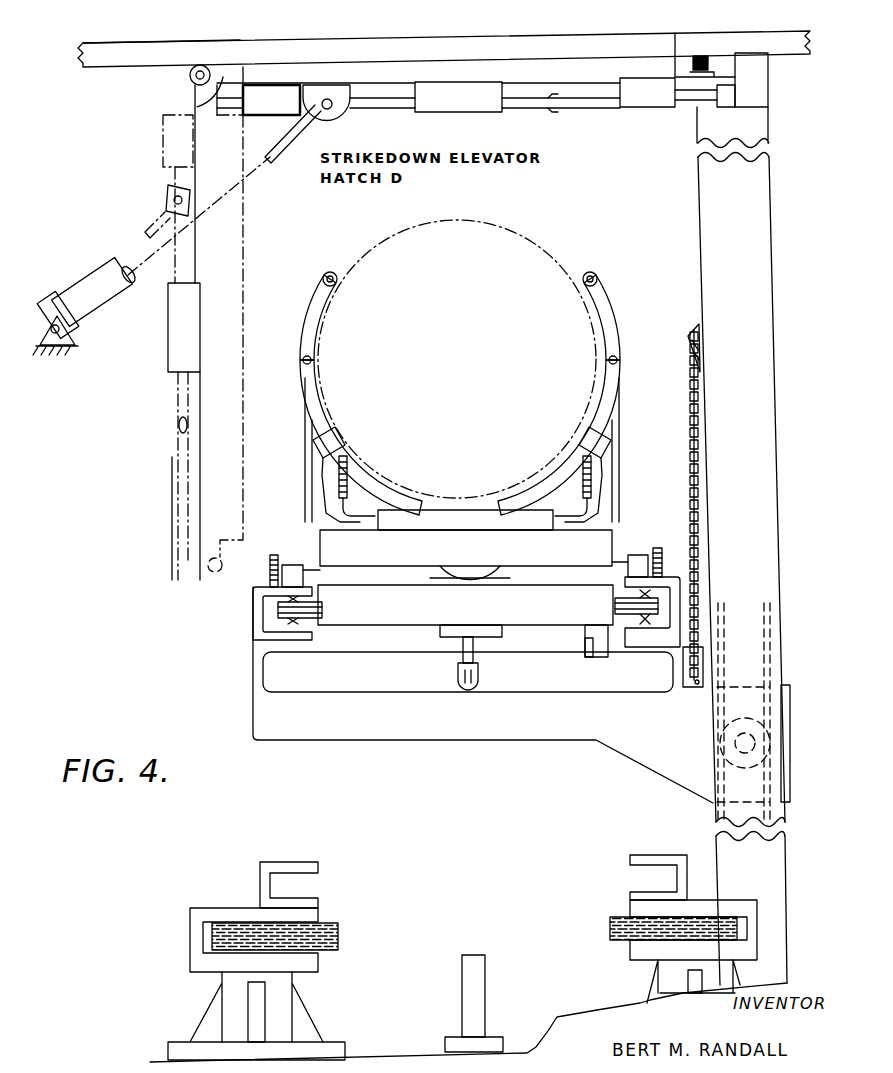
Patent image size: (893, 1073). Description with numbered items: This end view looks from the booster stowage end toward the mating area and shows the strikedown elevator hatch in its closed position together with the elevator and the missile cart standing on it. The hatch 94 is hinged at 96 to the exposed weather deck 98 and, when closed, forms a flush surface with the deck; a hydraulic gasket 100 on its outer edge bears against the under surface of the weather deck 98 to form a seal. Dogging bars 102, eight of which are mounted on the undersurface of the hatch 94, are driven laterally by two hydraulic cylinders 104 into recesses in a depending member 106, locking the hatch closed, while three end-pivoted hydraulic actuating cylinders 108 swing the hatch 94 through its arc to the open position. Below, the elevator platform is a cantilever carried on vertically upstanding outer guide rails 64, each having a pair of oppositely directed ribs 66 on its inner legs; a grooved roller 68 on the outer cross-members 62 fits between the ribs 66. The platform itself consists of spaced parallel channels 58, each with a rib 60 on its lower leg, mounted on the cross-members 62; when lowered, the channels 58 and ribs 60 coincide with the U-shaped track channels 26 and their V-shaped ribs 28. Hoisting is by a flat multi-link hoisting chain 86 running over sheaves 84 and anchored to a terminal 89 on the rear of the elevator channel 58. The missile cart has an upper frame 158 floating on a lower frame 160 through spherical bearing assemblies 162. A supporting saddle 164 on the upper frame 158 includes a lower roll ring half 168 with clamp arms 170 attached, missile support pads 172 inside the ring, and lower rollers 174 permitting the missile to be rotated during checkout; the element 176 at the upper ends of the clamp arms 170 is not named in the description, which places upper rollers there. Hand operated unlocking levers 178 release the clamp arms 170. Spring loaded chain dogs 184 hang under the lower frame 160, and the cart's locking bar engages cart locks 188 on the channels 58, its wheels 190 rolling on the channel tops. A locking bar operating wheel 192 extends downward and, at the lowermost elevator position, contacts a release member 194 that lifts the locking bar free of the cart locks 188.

The hatch 94 is at (420, 43).
The weather deck 98 is at (170, 44).
The hinge 96 is at (205, 103).
The hydraulic gasket 100 is at (705, 53).
The dogging bars 102 is at (591, 104).
The hydraulic cylinders 104 is at (461, 104).
The depending member 106 is at (762, 94).
The hydraulic actuating cylinders 108 is at (97, 280).
The outer guide rails 64 is at (699, 250).
The ribs 66 is at (714, 708).
The grooved roller 68 is at (720, 745).
The sheaves 84 is at (702, 353).
The hoisting chain 86 is at (690, 400).
The clamp arms 170 is at (316, 316).
The pivot pin 176 is at (330, 272).
The lower roll ring half 168 is at (305, 402).
The front supporting saddle 164 is at (372, 482).
The lower rollers 174 is at (348, 438).
The missile support pads 172 is at (552, 466).
The unlocking levers 178 is at (339, 478).
The upper frame 158 is at (543, 557).
The spherical bearing assemblies 162 is at (466, 568).
The lower frame 160 is at (547, 611).
The elevator platform channels 58 is at (255, 612).
The rib 60 is at (622, 618).
The cart locks 188 is at (641, 560).
The wheels 190 is at (657, 550).
The cross-members 62 is at (466, 740).
The locking bar operating wheel 192 is at (460, 676).
The chain dogs 184 is at (586, 650).
The terminal 89 is at (684, 668).
The U-shaped structural channels 26 is at (262, 872).
The V-shaped rib 28 is at (300, 893).
The release member 194 is at (468, 957).